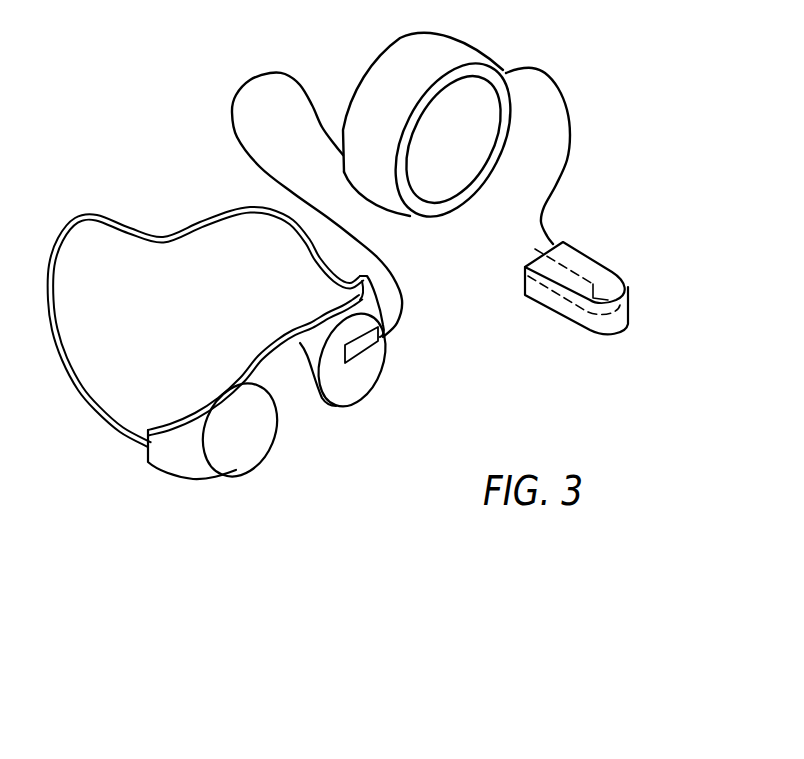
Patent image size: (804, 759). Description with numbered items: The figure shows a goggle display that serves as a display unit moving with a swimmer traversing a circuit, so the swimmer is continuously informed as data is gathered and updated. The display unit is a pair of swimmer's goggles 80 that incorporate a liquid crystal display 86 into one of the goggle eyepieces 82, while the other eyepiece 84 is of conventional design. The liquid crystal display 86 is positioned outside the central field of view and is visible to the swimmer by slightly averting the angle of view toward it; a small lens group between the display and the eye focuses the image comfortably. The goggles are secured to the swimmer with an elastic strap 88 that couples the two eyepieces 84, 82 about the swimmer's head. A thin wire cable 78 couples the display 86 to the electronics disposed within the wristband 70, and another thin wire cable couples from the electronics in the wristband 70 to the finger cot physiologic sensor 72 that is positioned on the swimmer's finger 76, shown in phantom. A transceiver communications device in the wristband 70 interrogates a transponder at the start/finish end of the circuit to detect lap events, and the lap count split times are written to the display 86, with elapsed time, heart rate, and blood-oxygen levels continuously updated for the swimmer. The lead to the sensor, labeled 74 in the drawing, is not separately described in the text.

The wristband 70 is at (360, 82).
The finger cot physiologic sensor 72 is at (583, 287).
The strap 74 is at (570, 153).
The swimmer's finger 76 is at (517, 278).
The thin wire cable 78 is at (230, 99).
The swimmer's goggles 80 is at (239, 339).
The eyepiece 82 is at (350, 377).
The eyepiece 84 is at (239, 436).
The liquid crystal display 86 is at (363, 347).
The elastic strap 88 is at (177, 231).